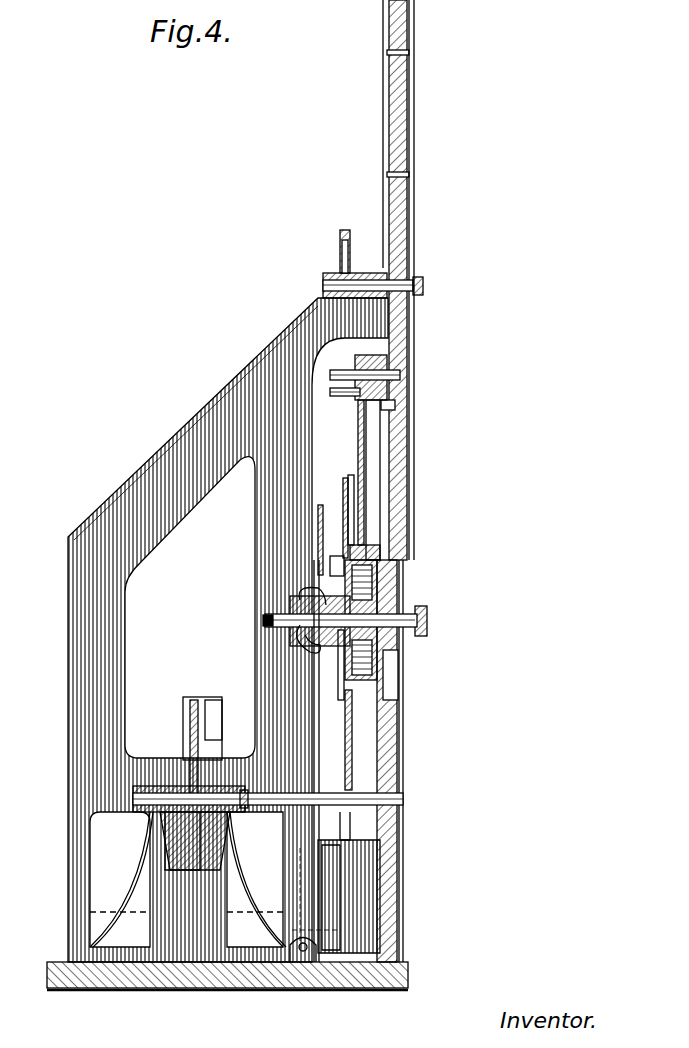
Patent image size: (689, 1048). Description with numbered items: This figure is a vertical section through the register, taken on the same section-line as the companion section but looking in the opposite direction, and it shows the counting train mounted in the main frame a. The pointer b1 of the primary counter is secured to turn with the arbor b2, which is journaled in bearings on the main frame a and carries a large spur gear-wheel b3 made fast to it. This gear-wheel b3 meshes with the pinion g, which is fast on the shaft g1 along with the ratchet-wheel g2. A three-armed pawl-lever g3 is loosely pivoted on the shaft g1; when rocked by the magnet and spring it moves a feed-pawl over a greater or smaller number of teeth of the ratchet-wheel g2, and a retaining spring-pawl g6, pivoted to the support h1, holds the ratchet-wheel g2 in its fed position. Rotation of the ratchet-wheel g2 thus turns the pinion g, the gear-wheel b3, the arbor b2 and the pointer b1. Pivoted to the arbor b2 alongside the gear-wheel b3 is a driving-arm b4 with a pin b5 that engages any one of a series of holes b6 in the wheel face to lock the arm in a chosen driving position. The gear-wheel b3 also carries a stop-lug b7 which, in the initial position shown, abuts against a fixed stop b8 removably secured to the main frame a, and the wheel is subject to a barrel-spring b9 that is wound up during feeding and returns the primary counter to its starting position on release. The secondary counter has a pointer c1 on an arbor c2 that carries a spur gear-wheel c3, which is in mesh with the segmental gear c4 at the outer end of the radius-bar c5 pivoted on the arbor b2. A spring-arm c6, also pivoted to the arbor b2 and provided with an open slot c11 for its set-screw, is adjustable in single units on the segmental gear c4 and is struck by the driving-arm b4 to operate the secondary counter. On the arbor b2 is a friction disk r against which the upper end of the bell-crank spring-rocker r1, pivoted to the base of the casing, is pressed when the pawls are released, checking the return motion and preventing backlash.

The main frame a is at (389, 163).
The plate c is at (410, 147).
The pointer of the secondary counter c1 is at (423, 287).
The arbor of the secondary counter c2 is at (323, 287).
The spur gear-wheel c3 is at (340, 251).
The segmental gear c4 is at (347, 352).
The open slot c11 is at (347, 398).
The standard b is at (403, 760).
The pointer b1 is at (427, 632).
The arbor b2 is at (265, 623).
The main spur gear-wheel b3 is at (318, 512).
The driving-arm b4 is at (330, 570).
The pin b5 is at (360, 552).
The series of holes b6 is at (345, 494).
The stop-lug b7 is at (372, 490).
The fixed stop b8 is at (365, 432).
The barrel-spring b9 is at (386, 672).
The radius-bar c5 is at (342, 650).
The spring-arm c6 is at (320, 598).
The friction disk r is at (314, 678).
The bell-crank spring-rocker r1 is at (300, 892).
The support h1 is at (183, 703).
The retaining spring-pawl g6 is at (198, 720).
The shaft g1 is at (133, 800).
The ratchet-wheel g2 is at (195, 862).
The three-armed pawl-lever g3 is at (183, 755).
The pinion g is at (350, 832).